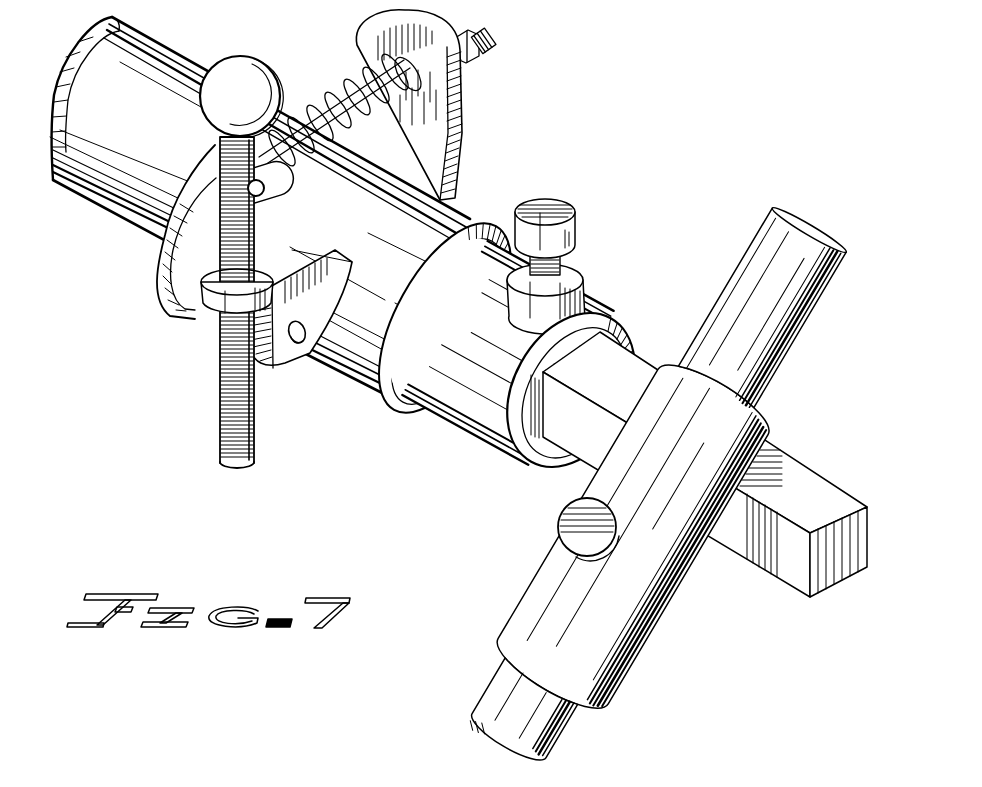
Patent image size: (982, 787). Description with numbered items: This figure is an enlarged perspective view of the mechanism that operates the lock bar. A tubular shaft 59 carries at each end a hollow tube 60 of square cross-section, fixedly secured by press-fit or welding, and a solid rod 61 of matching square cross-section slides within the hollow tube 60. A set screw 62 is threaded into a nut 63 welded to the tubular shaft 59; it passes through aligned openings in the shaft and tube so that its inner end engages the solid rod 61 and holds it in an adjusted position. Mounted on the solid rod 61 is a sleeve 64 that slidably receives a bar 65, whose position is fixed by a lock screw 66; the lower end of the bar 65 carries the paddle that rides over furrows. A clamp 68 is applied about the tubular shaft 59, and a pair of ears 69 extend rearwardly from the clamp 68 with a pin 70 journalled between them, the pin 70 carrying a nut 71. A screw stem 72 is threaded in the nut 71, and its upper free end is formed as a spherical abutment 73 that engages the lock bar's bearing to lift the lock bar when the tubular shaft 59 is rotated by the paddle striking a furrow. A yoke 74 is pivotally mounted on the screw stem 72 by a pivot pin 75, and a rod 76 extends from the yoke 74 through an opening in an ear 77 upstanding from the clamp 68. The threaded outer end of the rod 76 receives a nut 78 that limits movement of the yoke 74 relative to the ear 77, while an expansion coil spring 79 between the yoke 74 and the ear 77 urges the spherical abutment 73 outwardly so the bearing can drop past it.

The tubular shaft 59 is at (147, 37).
The hollow tube 60 is at (620, 343).
The solid rod 61 is at (813, 470).
The set screw 62 is at (567, 262).
The nut 63 is at (584, 300).
The sleeve 64 is at (530, 584).
The bar 65 is at (493, 681).
The lock screw 66 is at (558, 522).
The clamp 68 is at (465, 222).
The ears 69 is at (188, 313).
The pin 70 is at (318, 316).
The nut 71 is at (211, 322).
The screw stem 72 is at (256, 431).
The spherical abutment 73 is at (253, 58).
The yoke 74 is at (277, 183).
The pivot pin 75 is at (266, 196).
The rod 76 is at (330, 108).
The ear 77 is at (461, 112).
The nut 78 is at (447, 34).
The expansion coil spring 79 is at (350, 82).